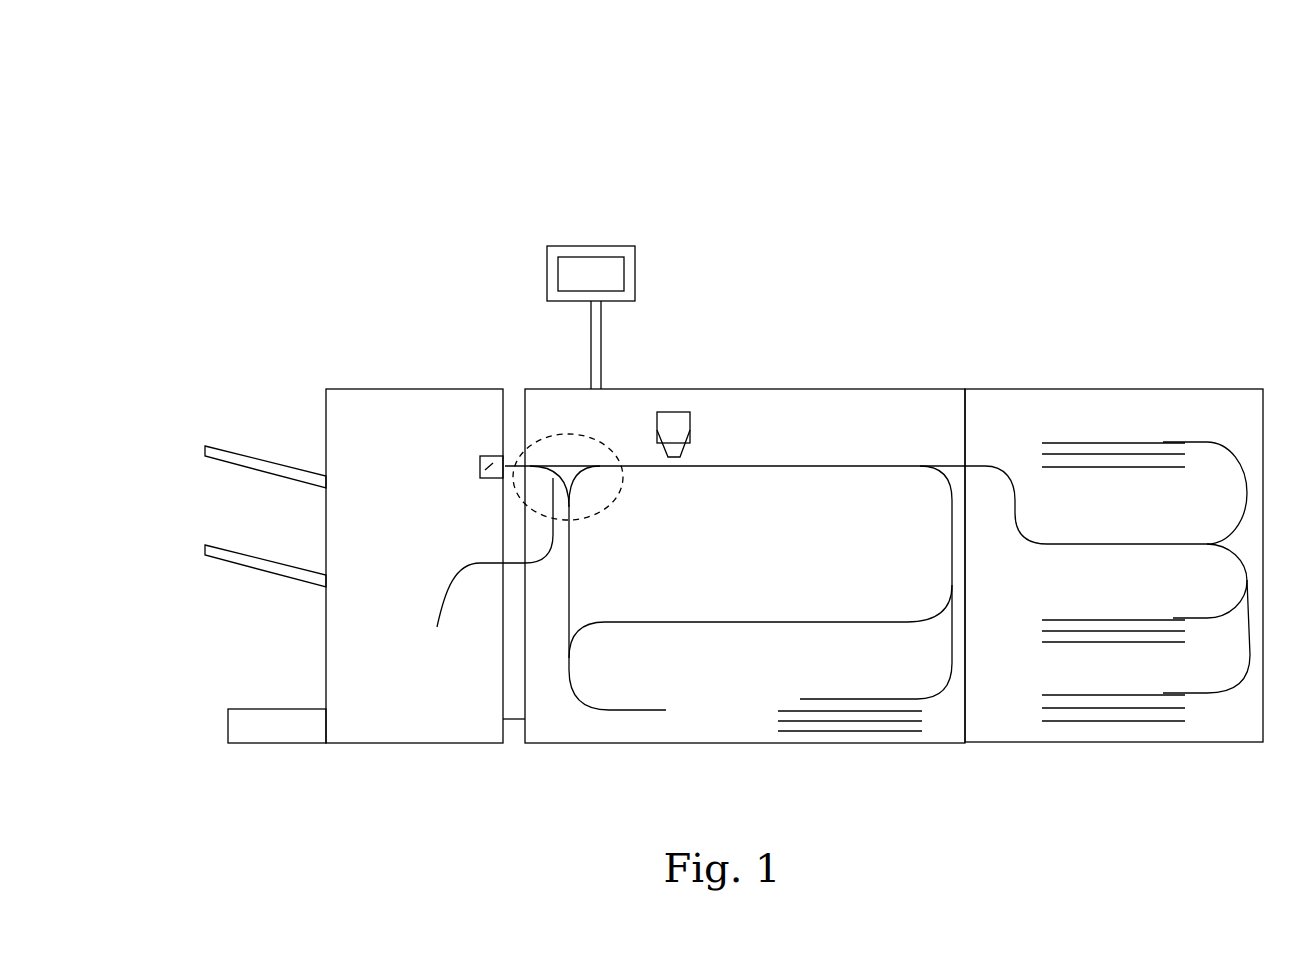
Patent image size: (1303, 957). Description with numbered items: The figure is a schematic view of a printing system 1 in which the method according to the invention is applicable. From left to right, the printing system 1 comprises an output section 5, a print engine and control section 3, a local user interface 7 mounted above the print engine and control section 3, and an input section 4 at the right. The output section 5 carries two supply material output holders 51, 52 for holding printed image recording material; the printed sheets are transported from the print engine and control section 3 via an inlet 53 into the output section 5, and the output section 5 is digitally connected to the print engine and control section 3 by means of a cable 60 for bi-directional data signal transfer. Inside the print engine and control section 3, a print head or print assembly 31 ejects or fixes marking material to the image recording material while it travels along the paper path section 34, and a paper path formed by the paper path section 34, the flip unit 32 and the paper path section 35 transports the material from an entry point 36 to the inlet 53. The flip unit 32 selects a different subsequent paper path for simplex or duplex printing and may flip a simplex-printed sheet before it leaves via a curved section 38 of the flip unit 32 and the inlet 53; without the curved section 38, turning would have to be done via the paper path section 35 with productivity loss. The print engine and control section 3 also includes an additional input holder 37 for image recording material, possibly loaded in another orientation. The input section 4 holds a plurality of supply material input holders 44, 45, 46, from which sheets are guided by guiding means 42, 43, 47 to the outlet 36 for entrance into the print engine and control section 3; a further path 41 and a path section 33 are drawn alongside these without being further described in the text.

The printing system 1 is at (734, 422).
The print engine and control section 3 is at (856, 567).
The input section 4 is at (1114, 533).
The output section 5 is at (354, 532).
The local user interface 7 is at (553, 250).
The print head or print assembly 31 is at (657, 412).
The flip unit 32 is at (600, 513).
The sheet conveyance path 33 is at (749, 467).
The paper path section 34 is at (870, 466).
The paper path section 35 is at (838, 622).
The entry point 36 is at (964, 466).
The additional input holder 37 is at (855, 731).
The curved section 38 is at (487, 565).
The conveyance path 41 is at (1057, 443).
The guiding means 42 is at (1245, 490).
The guiding means 43 is at (1243, 572).
The supply material input holder 44 is at (1045, 620).
The supply material input holder 45 is at (1050, 708).
The supply material input holder 46 is at (1050, 455).
The guiding means 47 is at (1248, 658).
The supply material output holder 51 is at (247, 462).
The supply material output holder 52 is at (244, 580).
The inlet 53 is at (480, 473).
The cable 60 is at (510, 719).